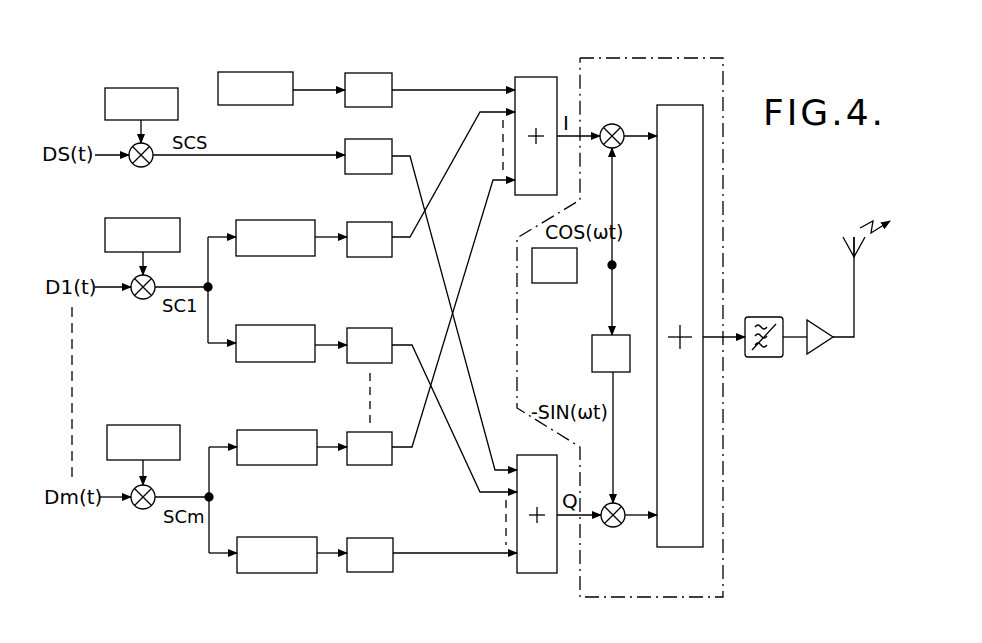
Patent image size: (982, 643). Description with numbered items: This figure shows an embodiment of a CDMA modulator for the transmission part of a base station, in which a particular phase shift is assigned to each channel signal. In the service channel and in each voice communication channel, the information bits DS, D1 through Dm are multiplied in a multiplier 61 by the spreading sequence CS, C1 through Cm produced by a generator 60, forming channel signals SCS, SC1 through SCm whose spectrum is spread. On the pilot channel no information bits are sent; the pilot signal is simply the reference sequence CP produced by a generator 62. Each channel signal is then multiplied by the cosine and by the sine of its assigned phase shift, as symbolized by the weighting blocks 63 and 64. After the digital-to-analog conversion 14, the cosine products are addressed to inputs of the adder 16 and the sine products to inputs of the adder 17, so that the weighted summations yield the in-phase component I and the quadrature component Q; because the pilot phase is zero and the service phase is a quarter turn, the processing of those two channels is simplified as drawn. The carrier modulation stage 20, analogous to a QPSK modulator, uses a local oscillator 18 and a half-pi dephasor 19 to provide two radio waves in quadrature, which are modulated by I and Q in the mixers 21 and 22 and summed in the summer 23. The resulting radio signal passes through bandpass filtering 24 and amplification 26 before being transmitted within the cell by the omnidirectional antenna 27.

The digital-to-analog conversion 14 is at (392, 78).
The adder 16 is at (535, 77).
The adder 17 is at (548, 575).
The local oscillator 18 is at (548, 284).
The π/2 dephasor 19 is at (592, 358).
The carrier modulation stage 20 is at (723, 82).
The mixer 21 is at (612, 124).
The mixer 22 is at (618, 528).
The summer 23 is at (703, 508).
The bandpass filtering 24 is at (770, 357).
The amplification 26 is at (823, 350).
The omnidirectional antenna 27 is at (856, 260).
The generator 60 is at (105, 92).
The multiplier 61 is at (148, 166).
The generator 62 is at (252, 72).
The weighting block 63 is at (258, 220).
The weighting block 64 is at (261, 325).